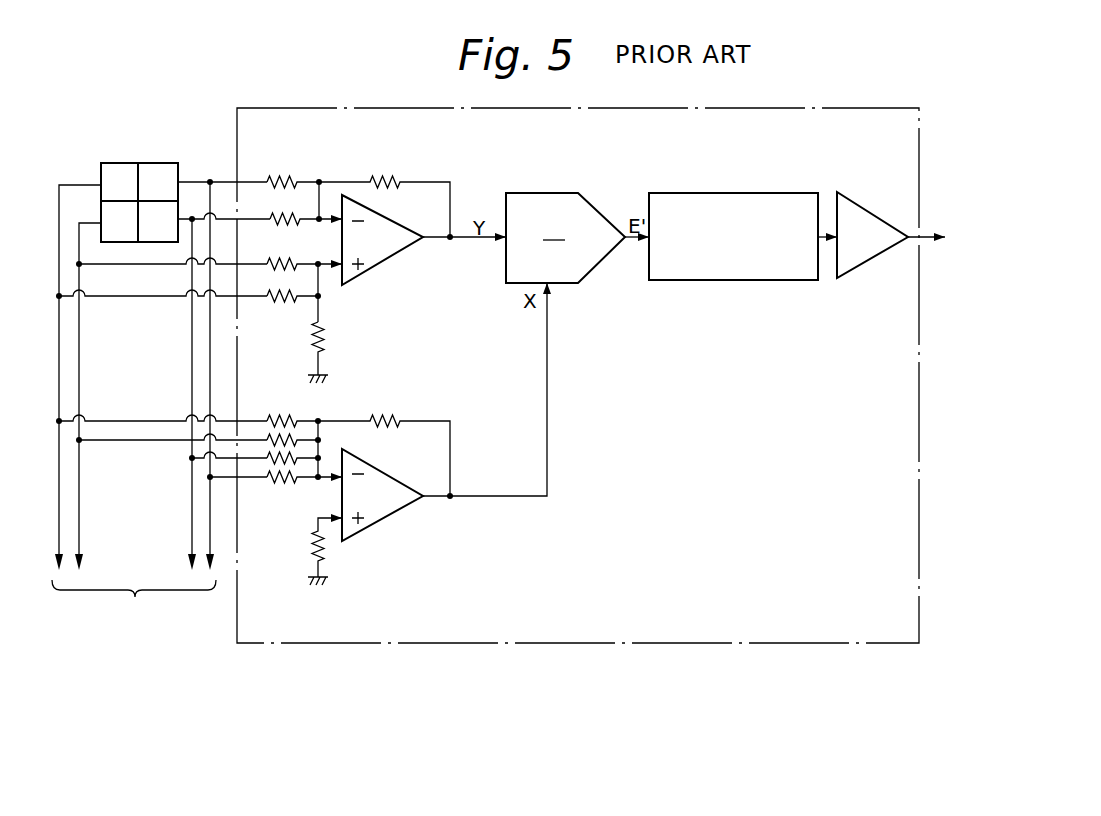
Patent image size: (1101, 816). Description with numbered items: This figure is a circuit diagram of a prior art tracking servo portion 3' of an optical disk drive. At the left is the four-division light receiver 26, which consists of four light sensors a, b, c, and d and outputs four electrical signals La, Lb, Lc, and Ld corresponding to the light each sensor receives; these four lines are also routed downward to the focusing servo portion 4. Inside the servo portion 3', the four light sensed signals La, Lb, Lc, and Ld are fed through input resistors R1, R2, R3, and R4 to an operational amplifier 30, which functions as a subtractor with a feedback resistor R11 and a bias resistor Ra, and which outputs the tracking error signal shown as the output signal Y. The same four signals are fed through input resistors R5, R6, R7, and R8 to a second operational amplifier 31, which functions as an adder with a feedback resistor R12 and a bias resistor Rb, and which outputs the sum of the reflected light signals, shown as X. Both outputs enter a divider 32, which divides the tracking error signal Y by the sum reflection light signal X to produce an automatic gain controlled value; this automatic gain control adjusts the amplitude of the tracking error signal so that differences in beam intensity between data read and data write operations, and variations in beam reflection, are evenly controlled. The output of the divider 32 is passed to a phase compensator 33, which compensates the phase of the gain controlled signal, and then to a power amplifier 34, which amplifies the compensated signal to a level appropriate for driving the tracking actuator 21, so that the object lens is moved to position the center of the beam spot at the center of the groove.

The tracking servo portion 3' is at (578, 356).
The four-division light receiver 26 is at (126, 168).
The light sensor a is at (168, 170).
The light sensor b is at (108, 172).
The light sensor c is at (107, 237).
The light sensor d is at (153, 233).
The light sensed signal La is at (192, 181).
The light sensed signal Lb is at (73, 185).
The light sensed signal Lc is at (91, 223).
The light sensed signal Ld is at (183, 218).
The input resistor R1 is at (278, 178).
The input resistor R2 is at (272, 216).
The input resistor R3 is at (280, 260).
The input resistor R4 is at (284, 299).
The input resistor R5 is at (295, 414).
The input resistor R6 is at (272, 437).
The input resistor R7 is at (300, 463).
The input resistor R8 is at (275, 482).
The feedback resistor R11 is at (395, 178).
The feedback resistor R12 is at (398, 418).
The bias resistor Ra is at (324, 338).
The bias resistor Rb is at (323, 556).
The operational amplifier 30 is at (383, 262).
The operational amplifier 31 is at (382, 520).
The divider 32 is at (546, 192).
The phase compensator 33 is at (710, 282).
The power amplifier 34 is at (868, 265).
The tracking actuator 21 is at (1019, 246).
The focusing servo portion 4 is at (134, 611).